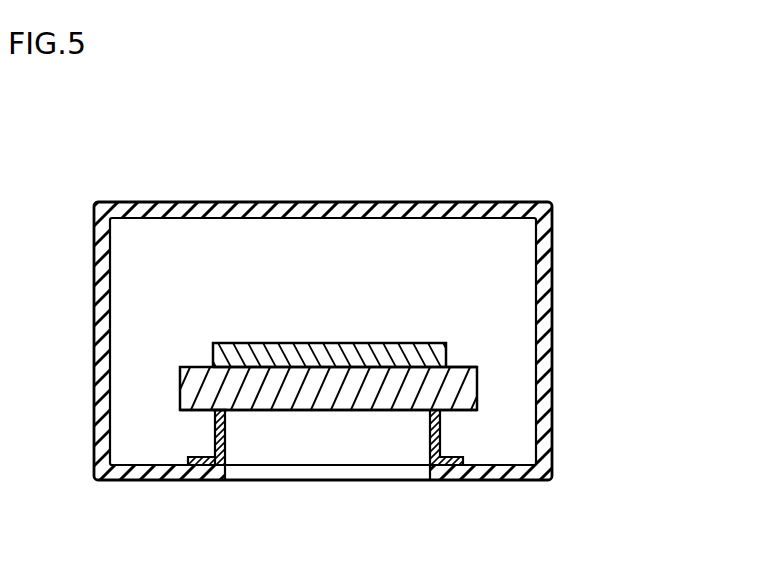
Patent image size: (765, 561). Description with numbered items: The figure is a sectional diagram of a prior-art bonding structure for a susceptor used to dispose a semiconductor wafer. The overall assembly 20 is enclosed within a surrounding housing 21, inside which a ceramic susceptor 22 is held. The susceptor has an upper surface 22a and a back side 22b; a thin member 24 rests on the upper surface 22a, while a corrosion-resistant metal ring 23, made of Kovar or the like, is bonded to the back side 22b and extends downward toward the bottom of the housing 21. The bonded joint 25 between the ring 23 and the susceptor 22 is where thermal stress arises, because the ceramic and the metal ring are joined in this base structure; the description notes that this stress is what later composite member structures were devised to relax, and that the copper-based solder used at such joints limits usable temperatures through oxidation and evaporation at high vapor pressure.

The mounting structure / device 20 is at (382, 330).
The housing (case) 21 is at (545, 288).
The ceramic susceptor 22 is at (396, 403).
The upper surface of mounting plate 22a is at (458, 366).
The back side of the ceramic susceptor 22b is at (282, 411).
The corrosion-resistant metal ring 23 is at (441, 428).
The circuit board / component 24 is at (256, 352).
The joint between plate and leg 25 is at (215, 413).